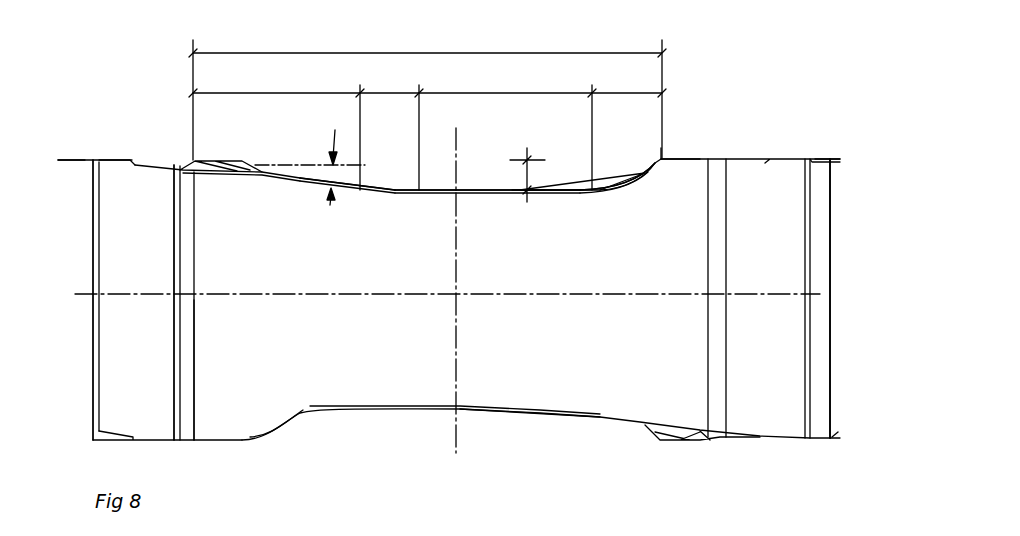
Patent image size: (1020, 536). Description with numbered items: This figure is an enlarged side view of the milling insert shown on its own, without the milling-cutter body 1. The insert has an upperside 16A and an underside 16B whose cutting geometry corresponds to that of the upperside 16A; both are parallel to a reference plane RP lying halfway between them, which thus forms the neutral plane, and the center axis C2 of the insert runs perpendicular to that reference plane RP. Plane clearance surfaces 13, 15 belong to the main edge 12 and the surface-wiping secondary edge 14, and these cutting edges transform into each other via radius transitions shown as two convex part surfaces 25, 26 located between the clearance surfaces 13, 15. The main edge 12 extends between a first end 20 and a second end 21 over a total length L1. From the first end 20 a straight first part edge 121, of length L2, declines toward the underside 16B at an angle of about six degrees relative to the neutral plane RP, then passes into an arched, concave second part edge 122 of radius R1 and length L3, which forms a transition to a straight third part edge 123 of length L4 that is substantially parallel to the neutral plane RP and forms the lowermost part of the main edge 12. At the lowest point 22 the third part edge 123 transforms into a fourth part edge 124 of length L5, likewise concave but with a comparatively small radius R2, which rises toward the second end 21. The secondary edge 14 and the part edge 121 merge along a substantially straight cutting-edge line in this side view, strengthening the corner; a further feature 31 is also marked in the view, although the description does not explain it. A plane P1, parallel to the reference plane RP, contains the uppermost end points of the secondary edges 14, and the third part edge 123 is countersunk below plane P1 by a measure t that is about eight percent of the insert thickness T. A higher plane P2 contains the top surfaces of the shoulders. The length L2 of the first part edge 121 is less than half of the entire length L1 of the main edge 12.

The milling-cutter body 1 is at (429, 160).
The main edge 12 is at (648, 170).
The clearance surface 13 is at (359, 375).
The secondary edge 14 is at (137, 160).
The clearance surface 15 is at (154, 385).
The upperside 16A is at (693, 76).
The underside 16B is at (550, 446).
The first end 20 is at (198, 174).
The second end 21 is at (662, 154).
The lowest point 22 is at (590, 192).
The convex part surface 25 is at (189, 342).
The convex part surface 26 is at (175, 225).
The bend point 31 is at (363, 190).
The first part edge 121 is at (288, 183).
The second part edge 122 is at (392, 192).
The third part edge 123 is at (470, 193).
The fourth part edge 124 is at (612, 195).
The center axis C2 is at (458, 150).
The total length L1 is at (427, 96).
The length of first part edge L2 is at (276, 131).
The length of second part edge L3 is at (391, 131).
The length of third part edge L4 is at (507, 131).
The length of fourth part edge L5 is at (629, 84).
The plane P1 is at (72, 170).
The common plane P2 is at (85, 155).
The radius R1 is at (392, 188).
The radius R2 is at (612, 186).
The reference plane RP is at (627, 293).
The thickness T is at (840, 298).
The countersink measure t is at (527, 175).